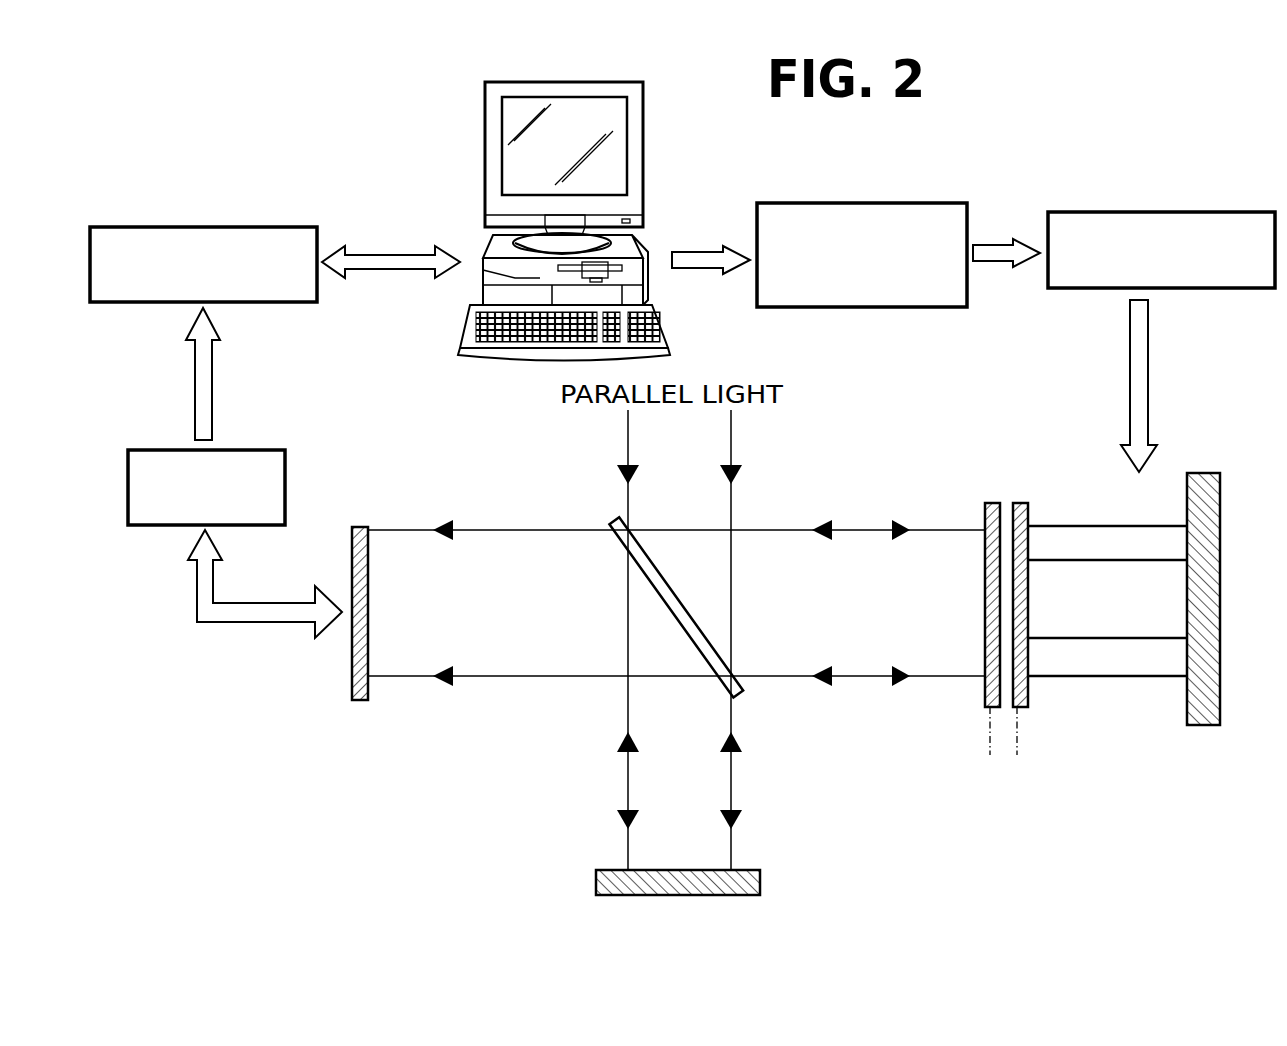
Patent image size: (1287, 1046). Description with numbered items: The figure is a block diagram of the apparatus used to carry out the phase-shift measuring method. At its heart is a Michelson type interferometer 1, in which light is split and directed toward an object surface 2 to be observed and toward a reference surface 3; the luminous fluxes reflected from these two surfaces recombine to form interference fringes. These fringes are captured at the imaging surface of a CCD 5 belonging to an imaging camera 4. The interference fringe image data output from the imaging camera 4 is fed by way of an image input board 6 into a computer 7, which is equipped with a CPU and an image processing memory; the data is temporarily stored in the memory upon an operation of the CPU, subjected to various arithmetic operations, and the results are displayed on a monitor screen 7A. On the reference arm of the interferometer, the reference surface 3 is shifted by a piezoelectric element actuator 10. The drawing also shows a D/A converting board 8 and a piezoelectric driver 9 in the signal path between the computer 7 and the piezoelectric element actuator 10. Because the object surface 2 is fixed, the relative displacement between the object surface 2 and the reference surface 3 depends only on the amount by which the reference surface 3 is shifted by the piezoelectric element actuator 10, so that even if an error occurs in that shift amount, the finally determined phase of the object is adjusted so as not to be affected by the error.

The Michelson type interferometer 1 is at (578, 504).
The object surface 2 is at (762, 868).
The reference surface 3 is at (1020, 503).
The imaging camera 4 is at (148, 527).
The CCD 5 is at (364, 700).
The image input board 6 is at (272, 227).
The computer 7 is at (548, 221).
The monitor screen 7A is at (520, 160).
The D/A converting board 8 is at (924, 203).
The piezoelectric driver 9 is at (1205, 212).
The PZT (piezoelectric element) actuator 10 is at (1164, 480).